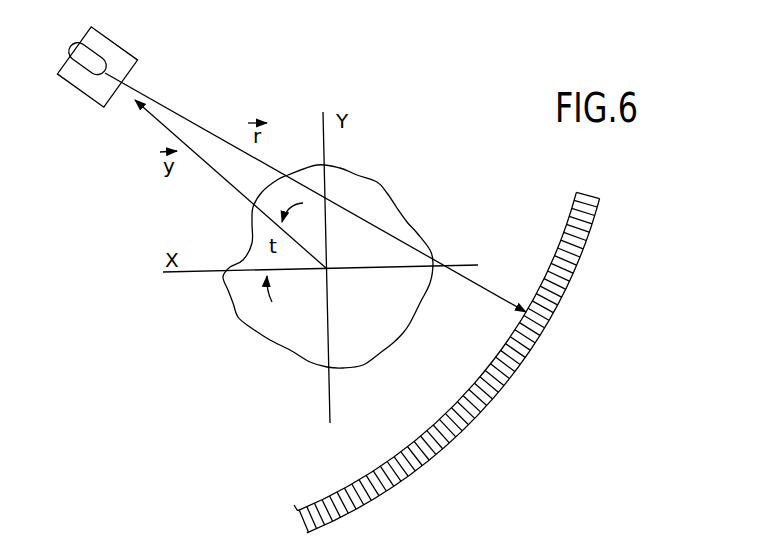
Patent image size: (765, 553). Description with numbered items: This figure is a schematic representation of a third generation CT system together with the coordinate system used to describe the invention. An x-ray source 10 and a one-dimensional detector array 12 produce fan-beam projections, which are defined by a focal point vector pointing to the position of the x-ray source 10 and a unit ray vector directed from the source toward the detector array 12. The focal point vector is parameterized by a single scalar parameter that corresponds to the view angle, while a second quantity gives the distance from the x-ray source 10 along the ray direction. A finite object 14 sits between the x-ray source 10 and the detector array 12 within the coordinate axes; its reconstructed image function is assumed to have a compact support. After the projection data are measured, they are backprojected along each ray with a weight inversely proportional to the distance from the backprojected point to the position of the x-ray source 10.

The x-ray source 10 is at (119, 39).
The one-dimensional detector array 12 is at (606, 234).
The finite object 14 is at (359, 172).